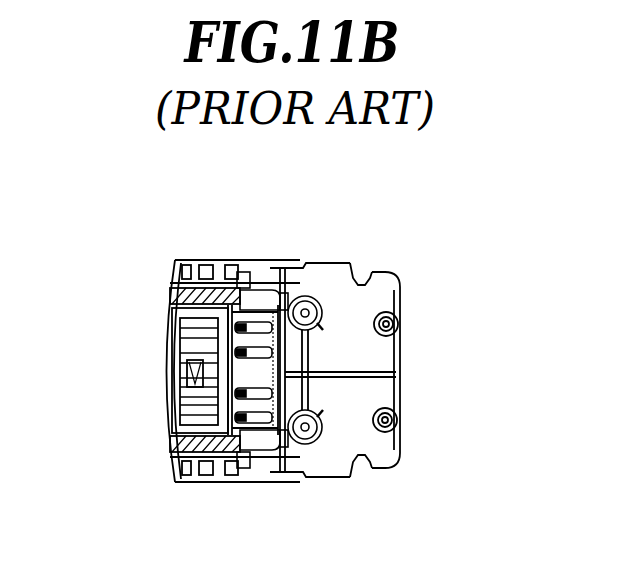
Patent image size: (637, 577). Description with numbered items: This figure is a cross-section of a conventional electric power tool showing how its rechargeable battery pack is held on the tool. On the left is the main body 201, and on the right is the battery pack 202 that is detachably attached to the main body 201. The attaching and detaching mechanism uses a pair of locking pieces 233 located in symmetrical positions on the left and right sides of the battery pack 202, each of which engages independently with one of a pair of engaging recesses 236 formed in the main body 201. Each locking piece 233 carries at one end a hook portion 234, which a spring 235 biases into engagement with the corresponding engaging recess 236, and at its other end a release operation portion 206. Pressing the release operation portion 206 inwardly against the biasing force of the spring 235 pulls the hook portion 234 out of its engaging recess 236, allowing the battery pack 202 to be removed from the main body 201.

The main body 201 is at (172, 293).
The battery pack 202 is at (380, 353).
The release operation portion 206 is at (346, 262).
The locking piece 233 is at (309, 283).
The hook portion 234 is at (250, 298).
The spring 235 is at (320, 312).
The engaging recess 236 is at (238, 430).